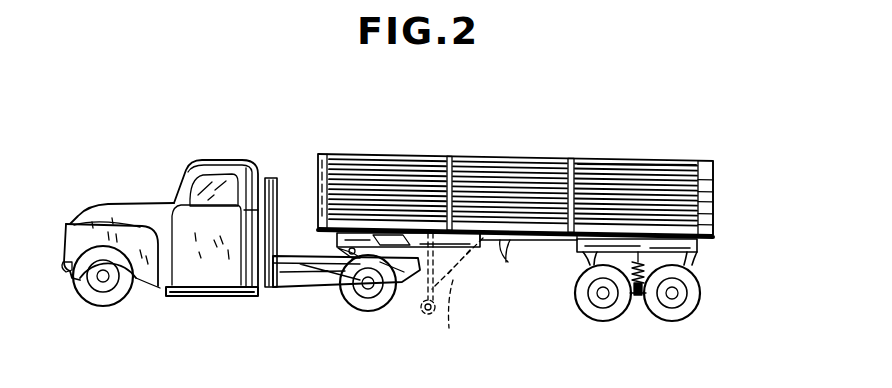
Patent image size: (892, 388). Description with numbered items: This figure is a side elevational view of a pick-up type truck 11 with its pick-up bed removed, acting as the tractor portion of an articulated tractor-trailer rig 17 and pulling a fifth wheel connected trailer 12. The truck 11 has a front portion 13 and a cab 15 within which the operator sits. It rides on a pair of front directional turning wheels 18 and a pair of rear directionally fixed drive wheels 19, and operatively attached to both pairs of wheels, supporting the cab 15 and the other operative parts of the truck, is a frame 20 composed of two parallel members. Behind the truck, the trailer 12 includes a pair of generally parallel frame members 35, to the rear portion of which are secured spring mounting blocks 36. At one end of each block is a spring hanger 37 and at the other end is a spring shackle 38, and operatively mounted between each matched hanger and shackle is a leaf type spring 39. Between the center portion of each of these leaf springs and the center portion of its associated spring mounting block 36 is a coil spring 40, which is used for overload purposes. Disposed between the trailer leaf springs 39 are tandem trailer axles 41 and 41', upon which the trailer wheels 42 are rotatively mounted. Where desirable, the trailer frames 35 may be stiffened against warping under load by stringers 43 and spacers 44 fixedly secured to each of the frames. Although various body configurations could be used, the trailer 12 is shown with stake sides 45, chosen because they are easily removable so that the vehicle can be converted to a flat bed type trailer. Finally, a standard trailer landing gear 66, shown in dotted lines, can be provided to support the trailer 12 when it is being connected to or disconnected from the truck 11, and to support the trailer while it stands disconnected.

The pick-up type truck 11 is at (197, 146).
The trailer 12 is at (535, 152).
The front portion 13 is at (103, 210).
The cab 15 is at (250, 170).
The tractor-trailer rig 17 is at (345, 137).
The front directional turning wheels 18 is at (88, 293).
The rear directionally fixed drive wheels 19 is at (368, 308).
The frame 20 is at (287, 288).
The frame members 35 is at (552, 241).
The spring mounting blocks 36 is at (700, 244).
The spring hanger 37 is at (698, 256).
The spring shackle 38 is at (590, 262).
The leaf type spring 39 is at (637, 298).
The coil spring 40 is at (648, 314).
The tandem trailer axle 41 is at (577, 315).
The tandem trailer axle 41' is at (717, 297).
The trailer wheels 42 is at (603, 313).
The stringers 43 is at (457, 255).
The spacers 44 is at (490, 248).
The stake sides 45 is at (638, 166).
The trailer landing gear 66 is at (437, 297).